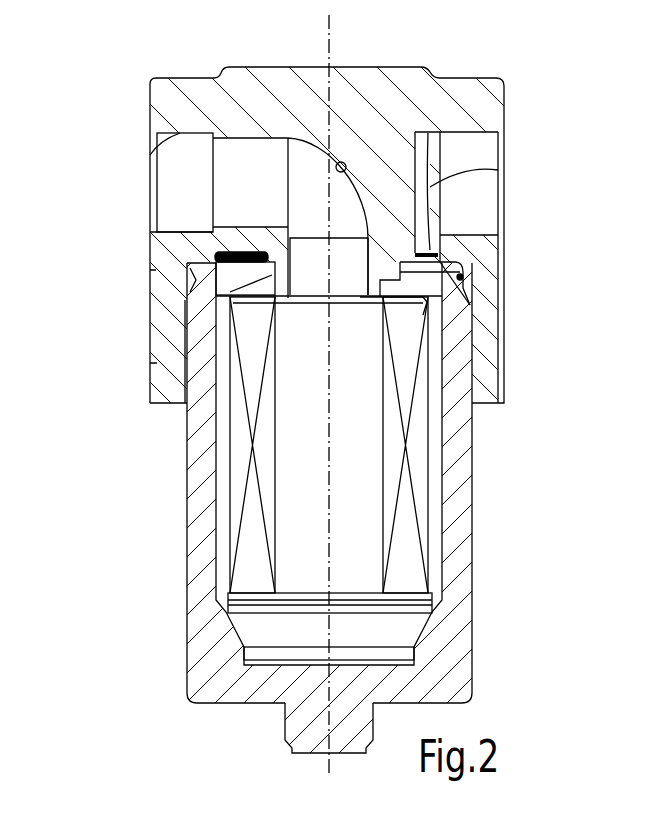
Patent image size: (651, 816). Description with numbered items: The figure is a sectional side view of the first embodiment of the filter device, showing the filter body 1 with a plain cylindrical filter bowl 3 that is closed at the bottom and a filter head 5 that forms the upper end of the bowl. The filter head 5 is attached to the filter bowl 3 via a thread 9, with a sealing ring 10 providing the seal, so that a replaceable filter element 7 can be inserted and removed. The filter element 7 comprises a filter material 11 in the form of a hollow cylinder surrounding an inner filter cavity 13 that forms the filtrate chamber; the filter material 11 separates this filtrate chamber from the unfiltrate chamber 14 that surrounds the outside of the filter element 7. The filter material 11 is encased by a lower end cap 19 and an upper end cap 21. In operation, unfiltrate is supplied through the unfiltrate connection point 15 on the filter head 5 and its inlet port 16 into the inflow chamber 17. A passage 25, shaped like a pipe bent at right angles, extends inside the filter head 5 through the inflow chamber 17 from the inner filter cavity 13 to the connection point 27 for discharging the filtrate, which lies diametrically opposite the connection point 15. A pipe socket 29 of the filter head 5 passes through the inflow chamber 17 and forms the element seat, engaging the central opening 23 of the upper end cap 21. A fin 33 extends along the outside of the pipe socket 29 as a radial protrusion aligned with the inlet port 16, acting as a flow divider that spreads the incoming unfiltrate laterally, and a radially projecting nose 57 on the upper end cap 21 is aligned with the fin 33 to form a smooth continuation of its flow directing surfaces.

The filter body 1 is at (485, 520).
The filter bowl 3 is at (215, 620).
The filter head 5 is at (163, 312).
The filter element 7 is at (227, 460).
The thread 9 is at (157, 358).
The sealing ring 10 is at (193, 275).
The filter material 11 is at (253, 505).
The inner filter cavity 13 is at (357, 527).
The unfiltrate chamber 14 is at (190, 408).
The unfiltrate connection point 15 is at (505, 138).
The inlet port 16 is at (426, 134).
The inflow chamber 17 is at (457, 245).
The lower end cap 19 is at (437, 600).
The upper end cap 21 is at (425, 297).
The central opening 23 is at (371, 300).
The passage 25 is at (347, 160).
The connection point 27 is at (150, 155).
The pipe socket 29 is at (288, 300).
The fin 33 is at (470, 172).
The nose 57 is at (440, 272).